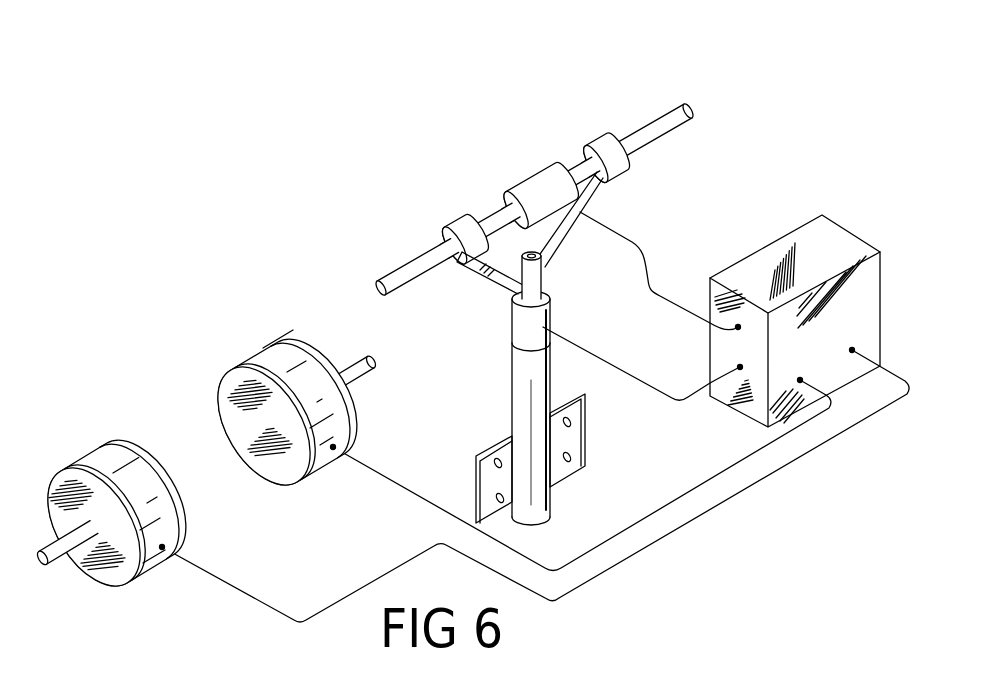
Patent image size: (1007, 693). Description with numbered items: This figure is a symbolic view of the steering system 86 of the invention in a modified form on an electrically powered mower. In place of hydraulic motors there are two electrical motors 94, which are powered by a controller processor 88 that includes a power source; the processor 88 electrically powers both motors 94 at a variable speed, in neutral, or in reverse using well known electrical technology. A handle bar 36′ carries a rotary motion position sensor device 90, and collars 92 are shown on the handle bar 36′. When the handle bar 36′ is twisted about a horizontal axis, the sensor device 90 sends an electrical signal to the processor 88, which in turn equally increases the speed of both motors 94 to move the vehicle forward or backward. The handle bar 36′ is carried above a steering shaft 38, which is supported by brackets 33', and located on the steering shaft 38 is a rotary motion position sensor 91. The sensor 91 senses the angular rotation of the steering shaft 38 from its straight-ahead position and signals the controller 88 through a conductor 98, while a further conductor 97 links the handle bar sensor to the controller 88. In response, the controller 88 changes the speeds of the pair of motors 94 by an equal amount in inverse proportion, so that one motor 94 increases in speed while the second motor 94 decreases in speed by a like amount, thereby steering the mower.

The drive system 86 is at (773, 95).
The handle bar 36′ is at (718, 36).
The pulleys / collars 92 is at (593, 141).
The rotary motion position sensor device 90 is at (566, 195).
The steering shaft 38 is at (550, 277).
The rotary motion position sensor 91 is at (518, 328).
The mounting brackets 33' is at (579, 458).
The controller processor 88 is at (808, 230).
The wire 97 is at (640, 245).
The conductor 98 is at (590, 344).
The electrical motors 94 is at (220, 385).